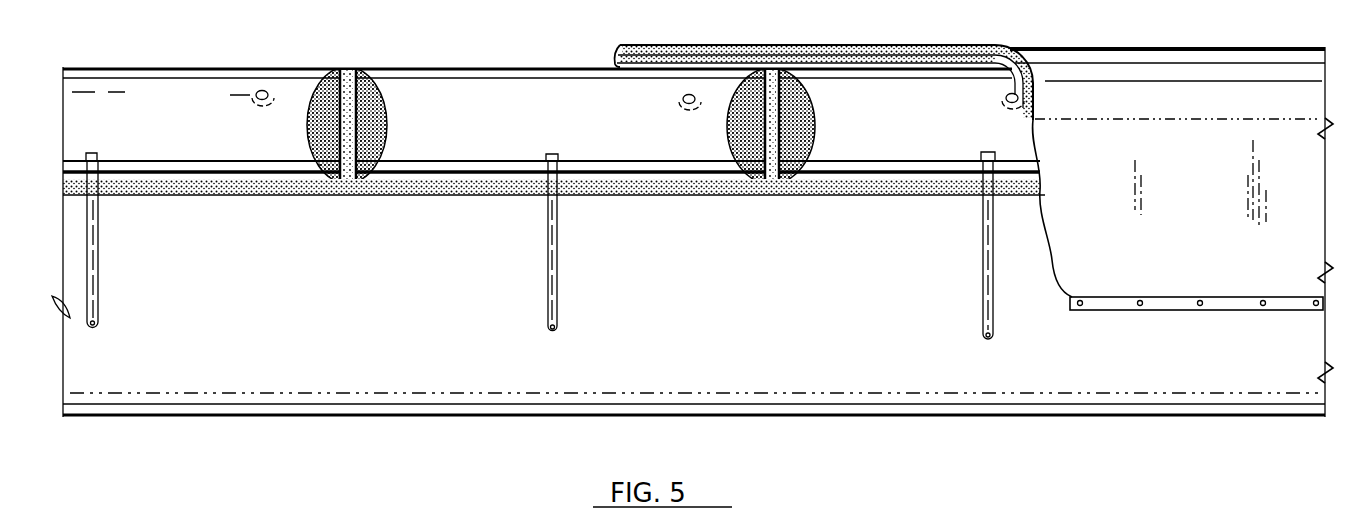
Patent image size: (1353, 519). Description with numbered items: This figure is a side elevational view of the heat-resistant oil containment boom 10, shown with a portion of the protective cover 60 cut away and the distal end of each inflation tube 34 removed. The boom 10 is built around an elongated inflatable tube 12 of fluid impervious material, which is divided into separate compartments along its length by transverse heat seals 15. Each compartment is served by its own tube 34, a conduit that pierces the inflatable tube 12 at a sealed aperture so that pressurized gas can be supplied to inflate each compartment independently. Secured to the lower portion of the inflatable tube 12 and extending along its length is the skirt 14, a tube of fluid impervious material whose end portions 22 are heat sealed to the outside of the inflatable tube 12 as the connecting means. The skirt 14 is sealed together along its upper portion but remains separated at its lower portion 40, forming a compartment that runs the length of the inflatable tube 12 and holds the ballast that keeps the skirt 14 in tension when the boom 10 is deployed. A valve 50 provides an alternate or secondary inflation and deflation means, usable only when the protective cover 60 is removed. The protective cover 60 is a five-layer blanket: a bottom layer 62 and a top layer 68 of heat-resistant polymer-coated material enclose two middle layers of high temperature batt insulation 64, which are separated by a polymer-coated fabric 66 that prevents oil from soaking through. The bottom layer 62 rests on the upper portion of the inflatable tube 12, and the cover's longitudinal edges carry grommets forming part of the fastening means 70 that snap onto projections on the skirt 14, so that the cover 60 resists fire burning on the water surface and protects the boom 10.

The heat-resistant oil containment boom 10 is at (892, 39).
The inflatable tube 12 is at (543, 88).
The skirt 14 is at (368, 328).
The transverse heat seals 15 is at (349, 70).
The end portions of skirt 22 is at (428, 196).
The inflation tube 34 is at (100, 286).
The lower portion of skirt 40 is at (185, 408).
The valve 50 is at (256, 93).
The protective cover 60 is at (1068, 39).
The bottom layer 62 is at (614, 66).
The batt insulation layers 64 is at (754, 45).
The polymer-coated fabric 66 is at (826, 45).
The top layer 68 is at (1156, 108).
The fastening means 70 is at (1082, 306).